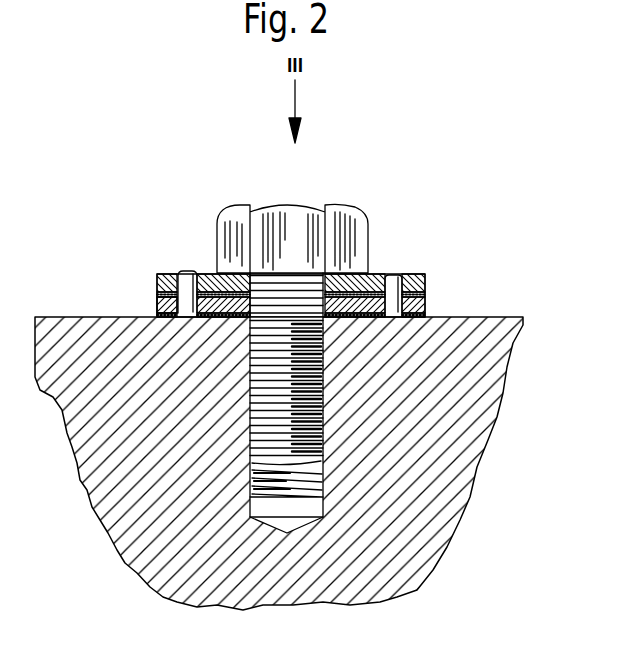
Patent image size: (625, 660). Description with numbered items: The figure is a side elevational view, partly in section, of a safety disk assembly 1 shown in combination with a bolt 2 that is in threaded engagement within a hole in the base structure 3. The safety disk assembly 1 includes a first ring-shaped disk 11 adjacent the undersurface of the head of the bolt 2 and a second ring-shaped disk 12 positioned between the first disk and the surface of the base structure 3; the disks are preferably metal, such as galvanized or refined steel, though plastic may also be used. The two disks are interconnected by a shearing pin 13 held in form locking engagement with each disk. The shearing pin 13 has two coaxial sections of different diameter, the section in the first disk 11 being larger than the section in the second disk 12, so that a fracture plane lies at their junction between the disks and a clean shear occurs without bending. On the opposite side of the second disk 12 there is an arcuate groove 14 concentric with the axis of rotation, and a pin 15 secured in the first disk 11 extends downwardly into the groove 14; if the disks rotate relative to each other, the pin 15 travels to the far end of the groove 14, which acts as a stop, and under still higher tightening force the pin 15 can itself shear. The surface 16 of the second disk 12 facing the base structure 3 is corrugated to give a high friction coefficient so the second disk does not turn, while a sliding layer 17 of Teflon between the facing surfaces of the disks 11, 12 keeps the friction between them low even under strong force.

The safety disk assembly 1 is at (104, 278).
The bolt 2 is at (345, 216).
The base structure 3 is at (477, 430).
The first ring-shaped disk 11 is at (425, 282).
The second ring-shaped disk 12 is at (416, 309).
The shearing pin 13 is at (400, 274).
The arcuate groove 14 is at (157, 307).
The pin 15 is at (181, 271).
The corrugated surface 16 is at (425, 316).
The sliding layer 17 is at (157, 291).